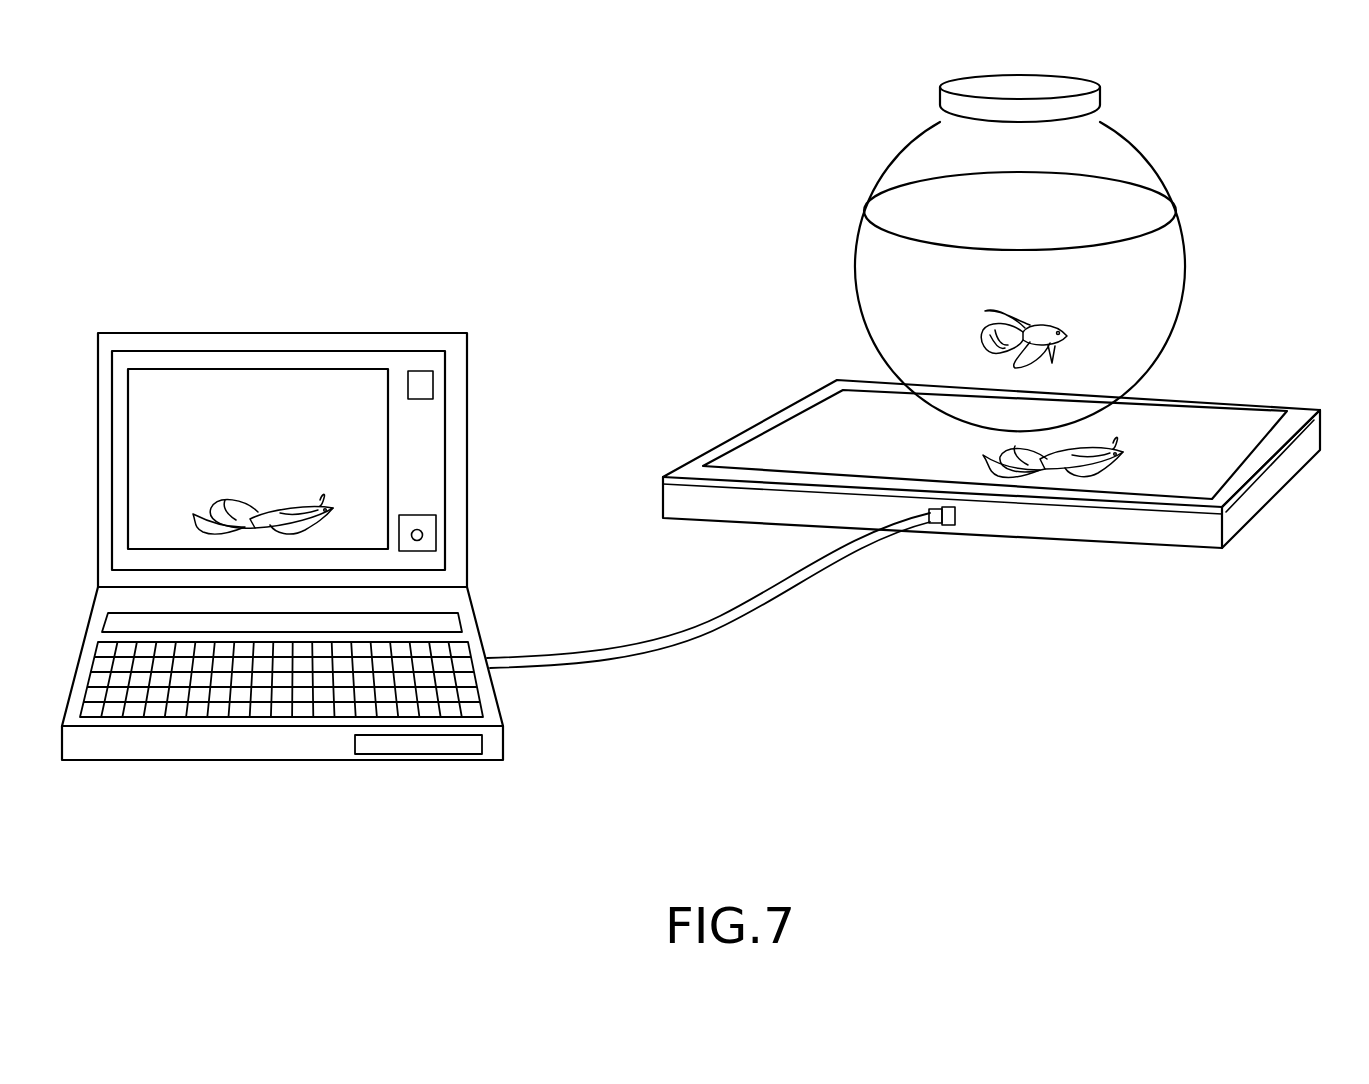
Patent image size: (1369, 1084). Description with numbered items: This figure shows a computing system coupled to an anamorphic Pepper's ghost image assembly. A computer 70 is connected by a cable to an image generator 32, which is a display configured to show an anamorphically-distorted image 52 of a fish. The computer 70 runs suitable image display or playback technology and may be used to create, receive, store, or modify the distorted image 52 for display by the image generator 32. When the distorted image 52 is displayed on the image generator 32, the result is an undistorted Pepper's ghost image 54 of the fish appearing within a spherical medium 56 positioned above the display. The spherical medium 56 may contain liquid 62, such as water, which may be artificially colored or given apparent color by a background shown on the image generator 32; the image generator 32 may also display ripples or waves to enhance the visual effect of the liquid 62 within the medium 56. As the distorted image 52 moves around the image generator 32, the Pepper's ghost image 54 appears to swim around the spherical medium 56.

The image generator 32 is at (1133, 543).
The distorted image 52 is at (272, 496).
The Pepper's ghost image 54 is at (1063, 327).
The spherical medium 56 is at (1125, 130).
The liquid 62 is at (878, 275).
The computer 70 is at (490, 715).